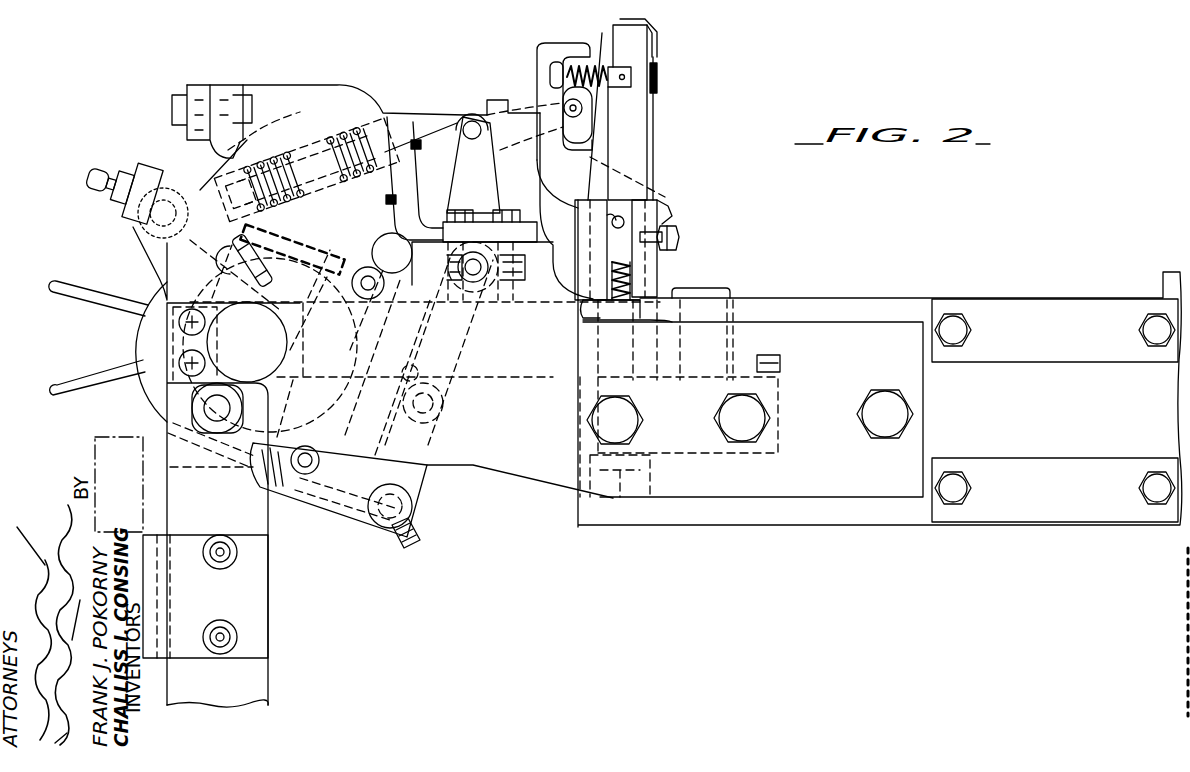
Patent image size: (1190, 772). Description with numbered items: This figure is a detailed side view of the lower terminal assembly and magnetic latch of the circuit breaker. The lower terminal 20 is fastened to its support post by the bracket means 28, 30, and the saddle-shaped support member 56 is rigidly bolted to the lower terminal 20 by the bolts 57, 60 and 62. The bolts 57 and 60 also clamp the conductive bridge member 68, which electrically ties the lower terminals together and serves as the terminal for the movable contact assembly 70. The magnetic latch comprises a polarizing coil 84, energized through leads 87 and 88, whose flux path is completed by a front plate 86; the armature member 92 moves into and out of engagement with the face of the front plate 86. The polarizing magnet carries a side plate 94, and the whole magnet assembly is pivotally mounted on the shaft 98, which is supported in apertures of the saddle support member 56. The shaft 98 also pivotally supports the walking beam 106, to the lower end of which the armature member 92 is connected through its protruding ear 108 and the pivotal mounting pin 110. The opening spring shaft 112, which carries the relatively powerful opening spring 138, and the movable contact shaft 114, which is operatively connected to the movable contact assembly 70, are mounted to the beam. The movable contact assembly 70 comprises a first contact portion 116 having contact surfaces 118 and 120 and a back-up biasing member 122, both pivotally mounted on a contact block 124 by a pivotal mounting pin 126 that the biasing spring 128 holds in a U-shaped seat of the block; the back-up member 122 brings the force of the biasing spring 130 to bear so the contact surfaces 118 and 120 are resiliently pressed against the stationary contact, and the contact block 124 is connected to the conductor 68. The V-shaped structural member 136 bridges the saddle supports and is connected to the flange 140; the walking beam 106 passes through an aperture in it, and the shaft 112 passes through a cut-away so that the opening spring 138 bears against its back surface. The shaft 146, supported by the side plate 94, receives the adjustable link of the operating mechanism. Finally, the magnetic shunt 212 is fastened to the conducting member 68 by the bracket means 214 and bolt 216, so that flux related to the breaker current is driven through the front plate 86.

The lower terminal 20 is at (1030, 419).
The bracket means 28 is at (1050, 468).
The bracket means 30 is at (1072, 347).
The saddle-shaped support member 56 is at (518, 468).
The bolt 57 is at (625, 425).
The bolt 60 is at (733, 427).
The bolt 62 is at (882, 432).
The conductive bridge member 68 is at (778, 396).
The movable contact assembly 70 is at (676, 203).
The polarizing coil 84 is at (137, 333).
The front plate 86 is at (373, 412).
The lead 87 is at (65, 293).
The lead 88 is at (67, 383).
The armature member 92 is at (375, 445).
The side plate 94 is at (358, 523).
The pivotal mounting shaft 98 is at (480, 273).
The walking beam 106 is at (498, 195).
The protruding ear 108 is at (420, 373).
The pivotal mounting pin 110 is at (437, 403).
The opening spring shaft 112 is at (430, 133).
The movable contact shaft 114 is at (520, 123).
The first contact portion 116 is at (637, 108).
The contact surface 118 is at (658, 73).
The contact surface 120 is at (655, 45).
The back-up biasing member 122 is at (548, 157).
The contact block 124 is at (667, 252).
The pivotal mounting pin 126 is at (615, 218).
The biasing spring 128 is at (635, 283).
The biasing spring 130 is at (594, 100).
The V-shaped structural member 136 is at (423, 222).
The opening spring 138 is at (305, 192).
The flange 140 is at (263, 208).
The shaft 146 is at (420, 518).
The magnetic shunt 212 is at (528, 375).
The bracket means 214 is at (732, 293).
The bolt 216 is at (767, 357).